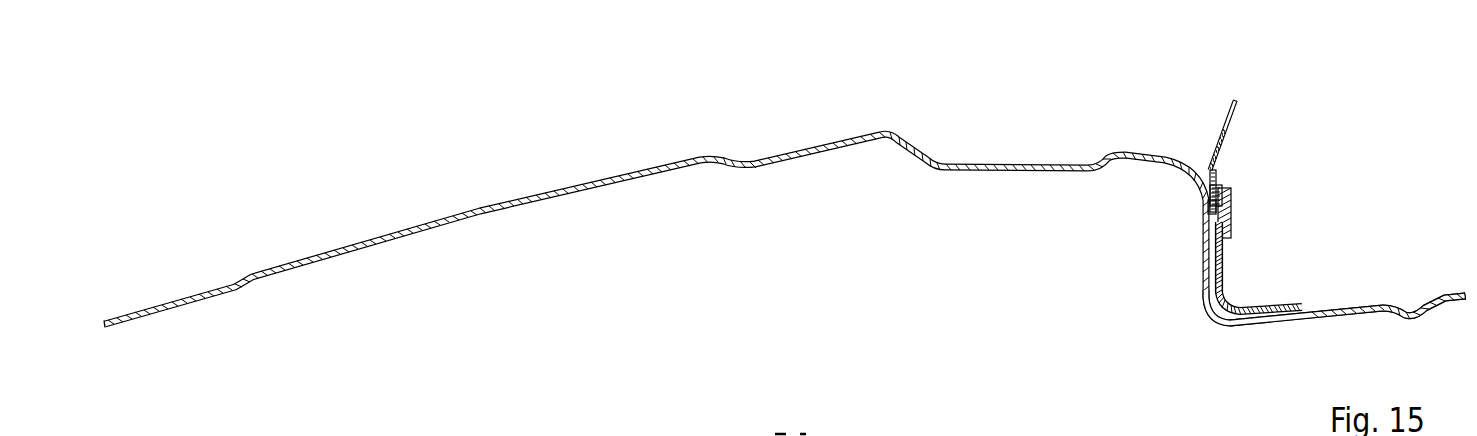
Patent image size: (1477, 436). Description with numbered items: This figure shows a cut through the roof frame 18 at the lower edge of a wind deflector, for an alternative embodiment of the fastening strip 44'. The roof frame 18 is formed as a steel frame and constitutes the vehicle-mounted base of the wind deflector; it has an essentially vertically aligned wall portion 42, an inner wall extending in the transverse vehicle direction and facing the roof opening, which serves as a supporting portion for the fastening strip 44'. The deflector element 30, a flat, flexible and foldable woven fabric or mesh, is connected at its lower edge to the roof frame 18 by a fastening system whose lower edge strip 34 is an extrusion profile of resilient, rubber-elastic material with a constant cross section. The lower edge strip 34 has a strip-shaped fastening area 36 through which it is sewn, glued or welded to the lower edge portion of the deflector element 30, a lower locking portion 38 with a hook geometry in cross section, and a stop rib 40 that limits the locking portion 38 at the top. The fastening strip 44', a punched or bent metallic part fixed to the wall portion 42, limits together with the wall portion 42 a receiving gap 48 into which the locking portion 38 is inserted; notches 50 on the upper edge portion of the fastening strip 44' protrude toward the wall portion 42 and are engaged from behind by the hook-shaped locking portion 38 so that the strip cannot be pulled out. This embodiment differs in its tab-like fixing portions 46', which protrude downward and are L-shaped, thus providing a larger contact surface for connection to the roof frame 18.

The roof frame 18 is at (450, 218).
The deflector element 30 is at (1236, 102).
The strip-shaped fastening area 36 is at (1226, 148).
The lower edge strip 34 is at (1221, 170).
The stop rib 40 is at (1225, 188).
The notches 50 is at (1228, 194).
The locking portion 38 is at (1216, 207).
The fastening strip 44' is at (1276, 268).
The receiving gap 48 is at (1215, 223).
The wall portion 42 is at (1208, 300).
The fixing portions 46' is at (1347, 297).